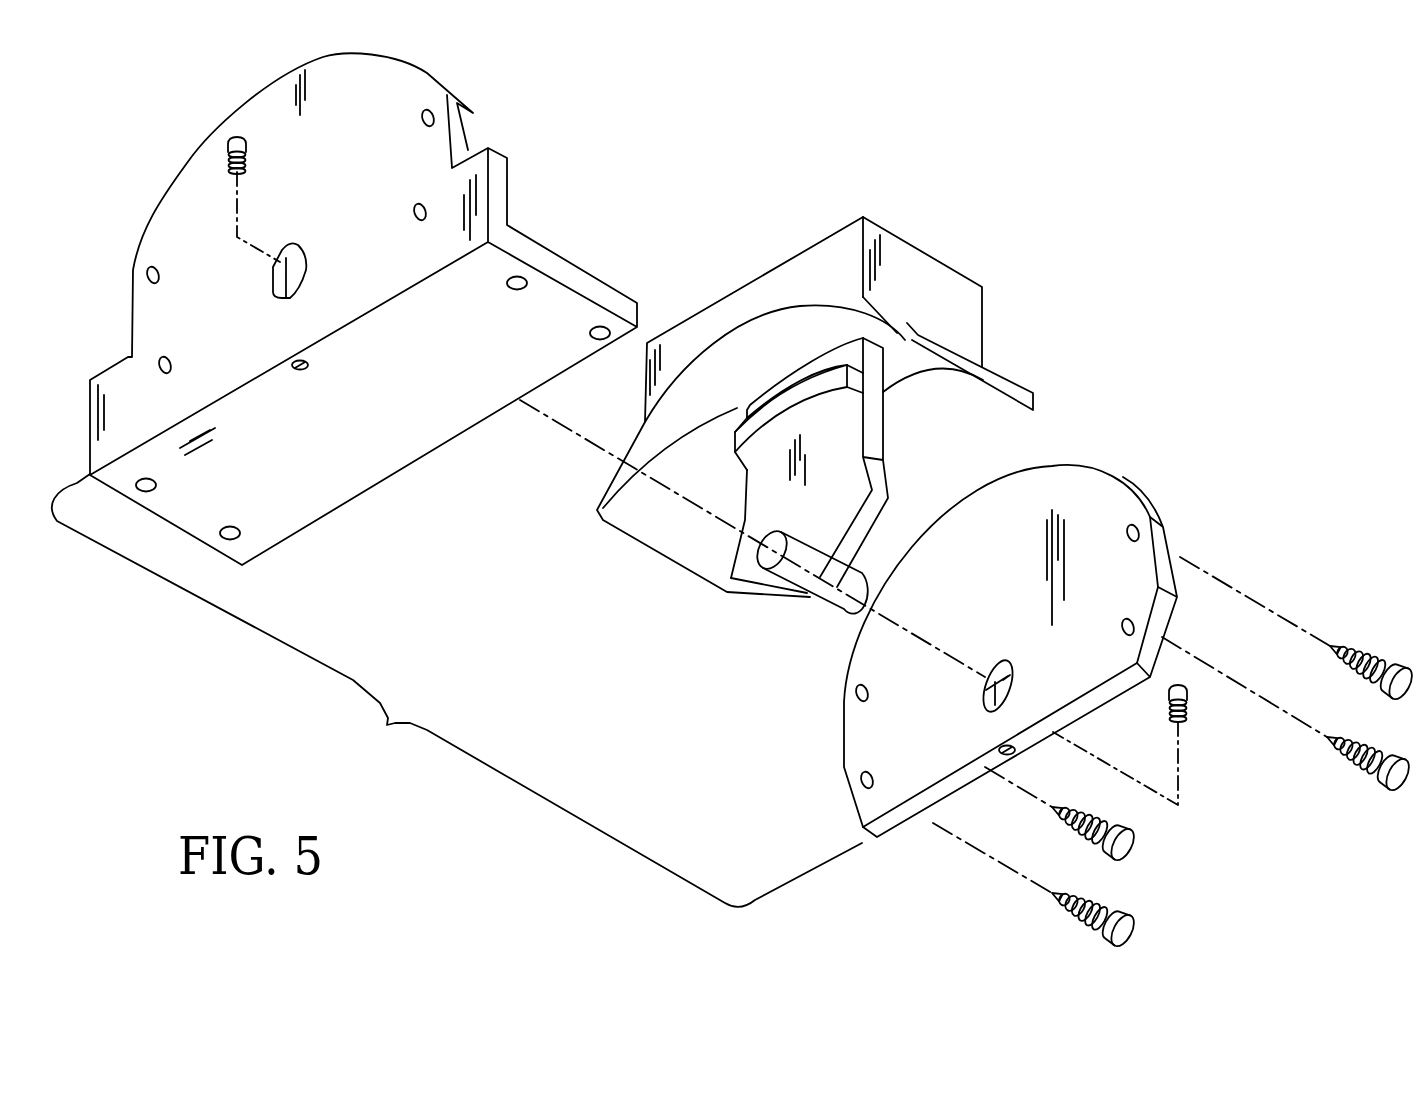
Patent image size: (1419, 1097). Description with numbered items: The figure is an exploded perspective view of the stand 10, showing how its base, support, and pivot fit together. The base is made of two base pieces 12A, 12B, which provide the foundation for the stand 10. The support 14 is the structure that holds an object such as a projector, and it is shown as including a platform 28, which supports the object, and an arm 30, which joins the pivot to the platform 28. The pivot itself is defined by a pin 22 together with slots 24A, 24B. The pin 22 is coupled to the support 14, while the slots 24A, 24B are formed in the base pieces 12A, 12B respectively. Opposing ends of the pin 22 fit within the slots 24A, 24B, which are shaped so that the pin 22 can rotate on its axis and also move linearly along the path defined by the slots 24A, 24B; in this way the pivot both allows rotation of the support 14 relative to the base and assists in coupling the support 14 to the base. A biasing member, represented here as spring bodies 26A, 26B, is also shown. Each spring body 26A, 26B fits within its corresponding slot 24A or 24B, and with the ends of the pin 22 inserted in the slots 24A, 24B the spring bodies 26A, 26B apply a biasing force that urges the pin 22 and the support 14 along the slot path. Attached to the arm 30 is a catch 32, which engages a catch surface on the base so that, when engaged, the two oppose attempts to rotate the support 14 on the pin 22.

The stand 10 is at (388, 719).
The base piece 12A is at (961, 651).
The base piece 12B is at (497, 193).
The support 14 is at (819, 404).
The pin 22 is at (797, 570).
The slot 24A is at (983, 688).
The slot 24B is at (303, 278).
The spring body 26A is at (1189, 688).
The spring body 26B is at (246, 149).
The platform 28 is at (930, 252).
The arm 30 is at (873, 442).
The catch 32 is at (737, 425).